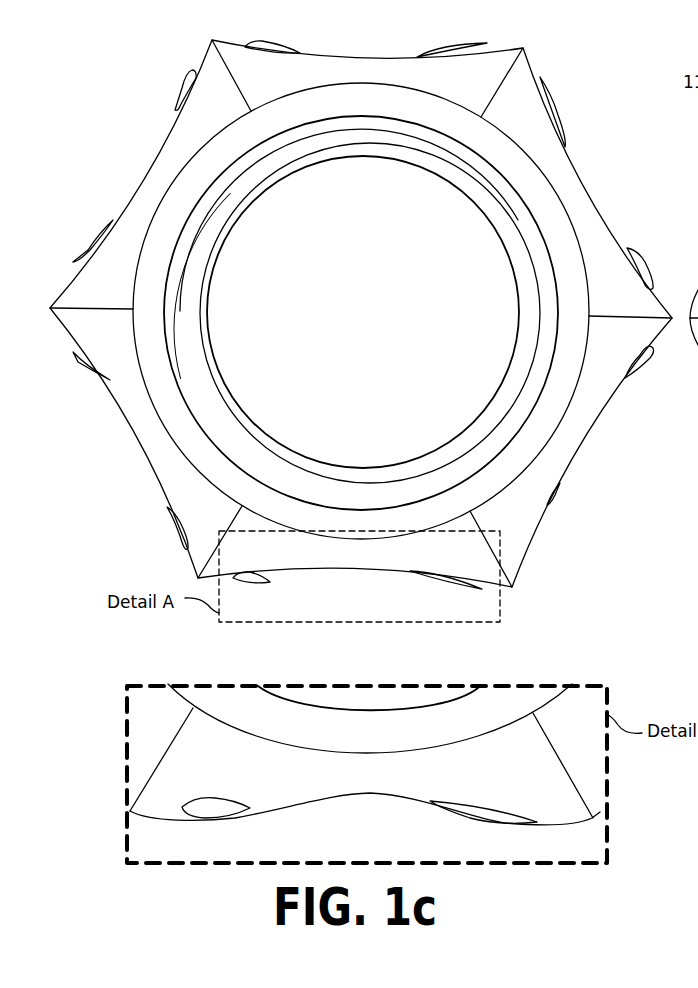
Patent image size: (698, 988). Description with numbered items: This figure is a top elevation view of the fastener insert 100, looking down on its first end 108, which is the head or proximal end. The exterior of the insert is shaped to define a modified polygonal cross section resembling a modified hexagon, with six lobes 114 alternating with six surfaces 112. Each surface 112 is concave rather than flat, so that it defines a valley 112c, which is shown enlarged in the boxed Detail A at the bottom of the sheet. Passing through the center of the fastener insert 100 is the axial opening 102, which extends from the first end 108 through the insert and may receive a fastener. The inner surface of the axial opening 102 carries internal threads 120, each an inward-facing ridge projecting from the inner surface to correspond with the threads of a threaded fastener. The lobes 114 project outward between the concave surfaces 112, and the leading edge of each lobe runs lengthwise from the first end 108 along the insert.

The fastener insert 100 is at (590, 128).
The axial opening 102 is at (378, 270).
The first end 108 is at (108, 98).
The surface 112 is at (590, 193).
The valley 112c is at (408, 800).
The lobe 114 is at (523, 48).
The internal thread 120 is at (462, 422).